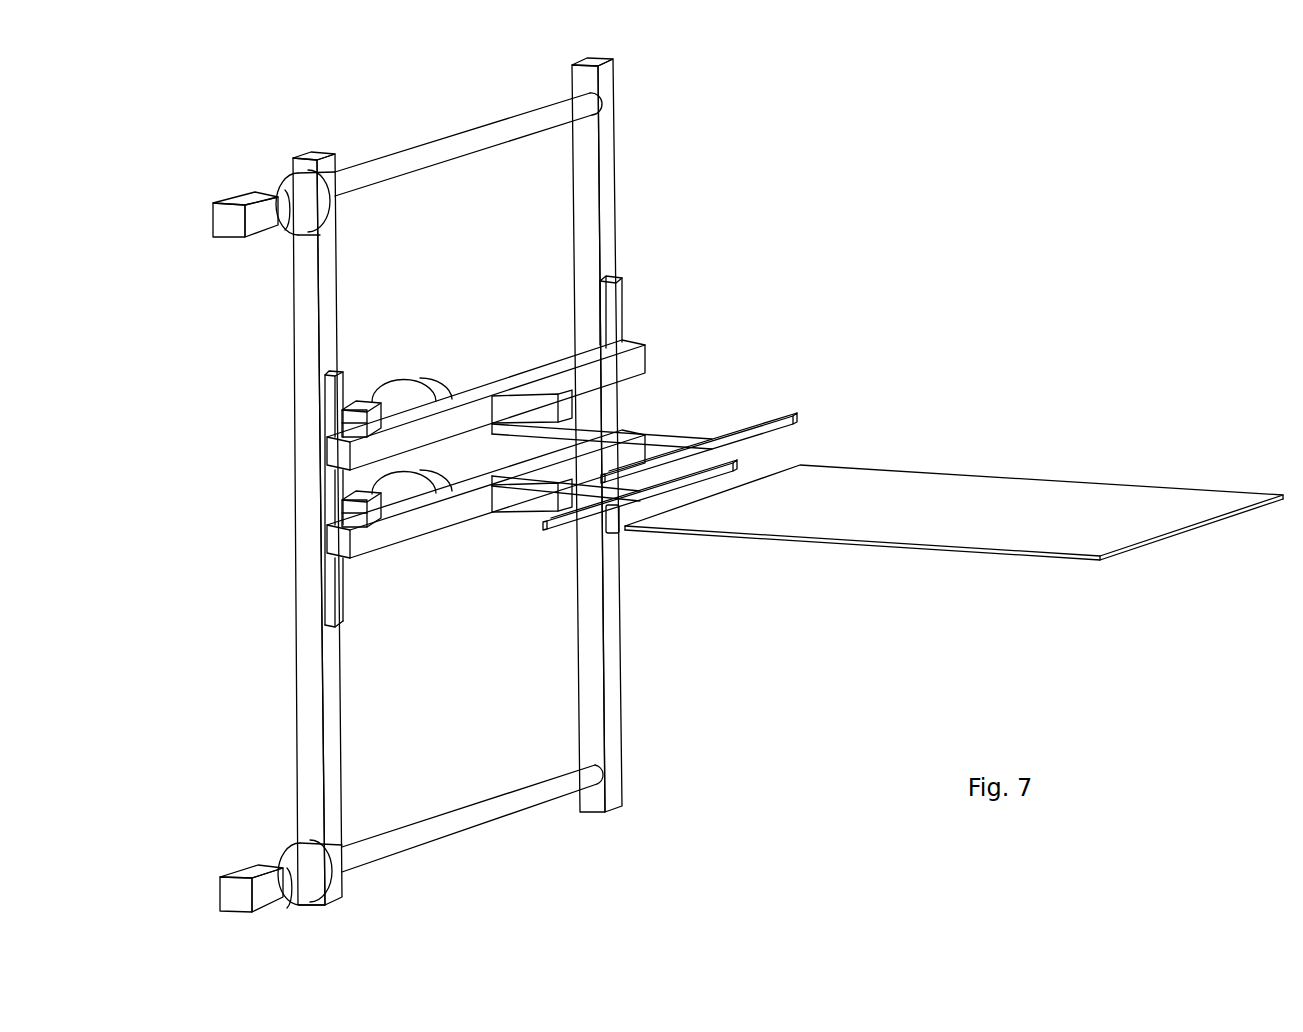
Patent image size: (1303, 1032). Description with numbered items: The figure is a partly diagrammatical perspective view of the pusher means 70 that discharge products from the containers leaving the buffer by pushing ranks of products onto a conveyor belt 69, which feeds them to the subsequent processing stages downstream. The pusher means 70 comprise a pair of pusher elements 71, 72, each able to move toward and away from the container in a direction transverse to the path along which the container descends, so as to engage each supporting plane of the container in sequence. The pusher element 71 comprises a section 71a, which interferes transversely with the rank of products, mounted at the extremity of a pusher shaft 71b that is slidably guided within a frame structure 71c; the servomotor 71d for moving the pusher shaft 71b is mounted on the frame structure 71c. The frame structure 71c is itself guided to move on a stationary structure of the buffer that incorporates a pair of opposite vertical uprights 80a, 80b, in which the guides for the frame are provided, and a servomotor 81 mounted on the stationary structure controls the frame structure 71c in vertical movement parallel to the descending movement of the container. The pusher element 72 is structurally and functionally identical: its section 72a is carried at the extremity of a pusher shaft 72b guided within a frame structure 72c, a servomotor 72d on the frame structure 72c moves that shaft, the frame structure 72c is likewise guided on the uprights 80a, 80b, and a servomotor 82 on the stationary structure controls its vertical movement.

The conveyor belt 69 is at (988, 488).
The pusher means 70 is at (543, 436).
The pusher element 71 is at (598, 357).
The section 71a is at (793, 410).
The pusher shaft 71b is at (663, 437).
The frame structure 71c is at (462, 428).
The servomotor 71d is at (365, 400).
The pusher element 72 is at (543, 528).
The section 72a is at (742, 465).
The pusher shaft 72b is at (533, 497).
The frame structure 72c is at (458, 517).
The servomotor 72d is at (345, 497).
The vertical upright 80a is at (302, 280).
The vertical upright 80b is at (607, 188).
The servomotor 81 is at (236, 201).
The servomotor 82 is at (248, 875).